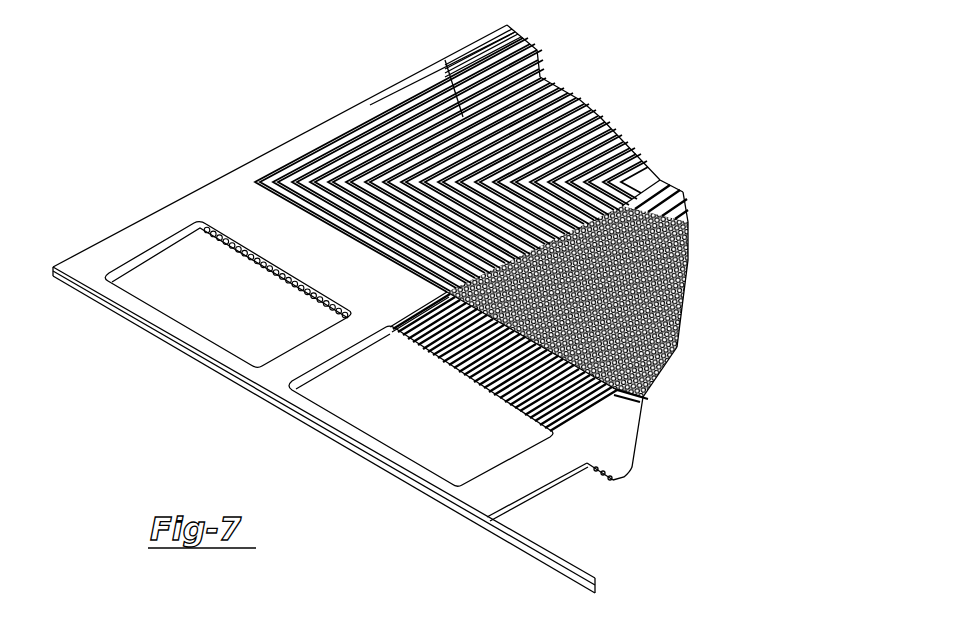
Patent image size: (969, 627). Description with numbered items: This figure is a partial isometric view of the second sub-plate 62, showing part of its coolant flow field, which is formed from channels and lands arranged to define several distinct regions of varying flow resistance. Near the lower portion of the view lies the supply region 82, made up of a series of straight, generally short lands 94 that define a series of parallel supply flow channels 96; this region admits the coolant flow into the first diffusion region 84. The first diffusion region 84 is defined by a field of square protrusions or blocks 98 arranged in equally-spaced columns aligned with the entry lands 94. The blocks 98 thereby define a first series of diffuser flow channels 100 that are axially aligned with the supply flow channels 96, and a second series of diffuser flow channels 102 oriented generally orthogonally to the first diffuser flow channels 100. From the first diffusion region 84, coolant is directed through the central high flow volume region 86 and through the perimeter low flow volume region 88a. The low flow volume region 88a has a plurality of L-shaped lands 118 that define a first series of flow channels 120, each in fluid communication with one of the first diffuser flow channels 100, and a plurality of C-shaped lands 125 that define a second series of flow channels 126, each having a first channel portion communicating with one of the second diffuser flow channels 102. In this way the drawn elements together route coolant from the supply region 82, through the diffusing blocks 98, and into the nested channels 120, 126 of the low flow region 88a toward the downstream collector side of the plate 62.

The second sub-plate 62 is at (312, 110).
The supply region 82 is at (462, 402).
The first diffusion region 84 is at (686, 350).
The central high flow volume region 86 is at (677, 184).
The perimeter low flow volume region 88a is at (538, 68).
The lands 94 is at (503, 380).
The supply flow channels 96 is at (437, 362).
The blocks 98 is at (607, 392).
The first diffuser flow channels 100 is at (687, 260).
The second diffuser flow channels 102 is at (686, 289).
The L-shaped lands 118 is at (667, 186).
The flow channels 120 is at (688, 200).
The C-shaped lands 125 is at (402, 117).
The flow channels 126 is at (480, 100).